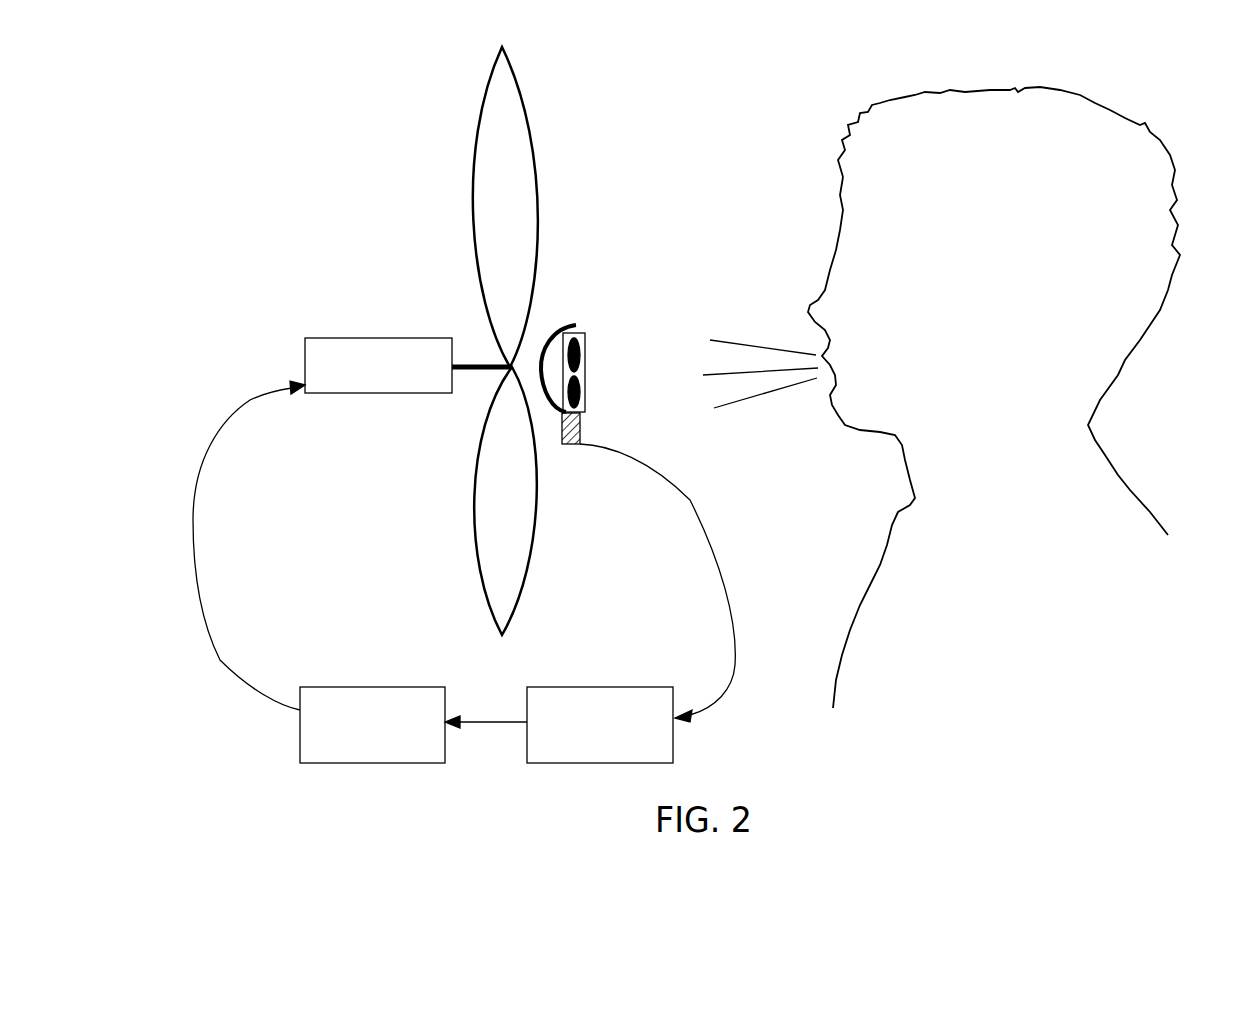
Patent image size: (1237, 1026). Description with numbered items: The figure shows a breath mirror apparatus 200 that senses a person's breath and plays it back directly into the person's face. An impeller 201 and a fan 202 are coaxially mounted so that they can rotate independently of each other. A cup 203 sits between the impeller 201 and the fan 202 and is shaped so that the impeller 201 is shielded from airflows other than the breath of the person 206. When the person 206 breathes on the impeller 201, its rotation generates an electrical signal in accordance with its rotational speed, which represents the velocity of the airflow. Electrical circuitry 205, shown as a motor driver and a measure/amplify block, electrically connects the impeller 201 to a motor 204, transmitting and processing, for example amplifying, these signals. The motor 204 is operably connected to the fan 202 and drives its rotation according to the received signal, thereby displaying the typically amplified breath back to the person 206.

The apparatus 200 is at (349, 157).
The impeller 201 is at (585, 338).
The fan 202 is at (522, 112).
The cup 203 is at (558, 326).
The motor 204 is at (395, 338).
The electrical circuitry 205 is at (398, 763).
The person 206 is at (890, 530).